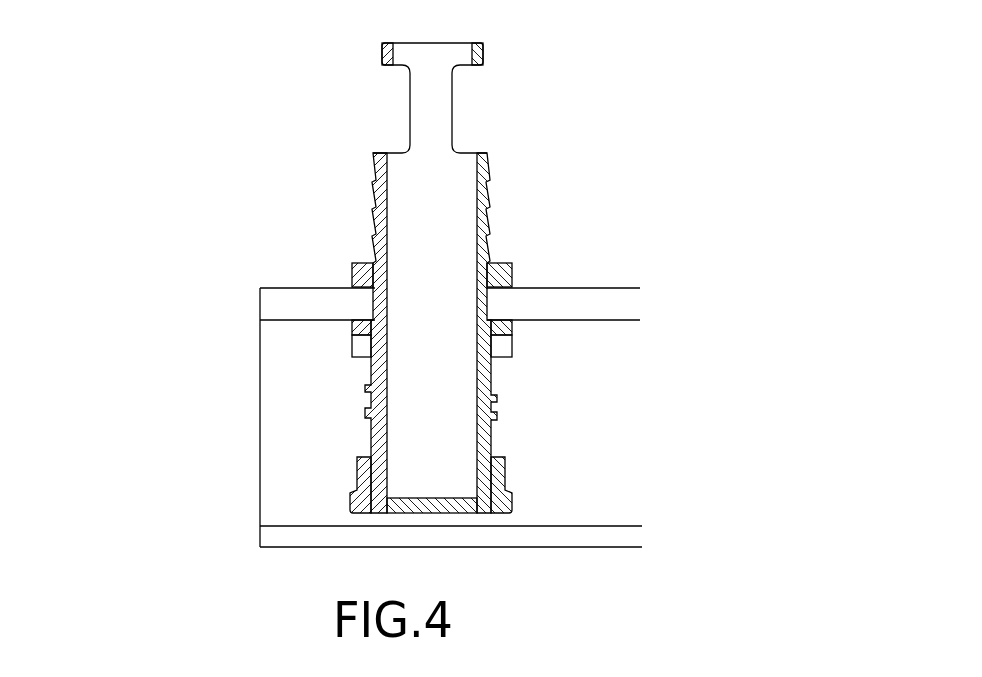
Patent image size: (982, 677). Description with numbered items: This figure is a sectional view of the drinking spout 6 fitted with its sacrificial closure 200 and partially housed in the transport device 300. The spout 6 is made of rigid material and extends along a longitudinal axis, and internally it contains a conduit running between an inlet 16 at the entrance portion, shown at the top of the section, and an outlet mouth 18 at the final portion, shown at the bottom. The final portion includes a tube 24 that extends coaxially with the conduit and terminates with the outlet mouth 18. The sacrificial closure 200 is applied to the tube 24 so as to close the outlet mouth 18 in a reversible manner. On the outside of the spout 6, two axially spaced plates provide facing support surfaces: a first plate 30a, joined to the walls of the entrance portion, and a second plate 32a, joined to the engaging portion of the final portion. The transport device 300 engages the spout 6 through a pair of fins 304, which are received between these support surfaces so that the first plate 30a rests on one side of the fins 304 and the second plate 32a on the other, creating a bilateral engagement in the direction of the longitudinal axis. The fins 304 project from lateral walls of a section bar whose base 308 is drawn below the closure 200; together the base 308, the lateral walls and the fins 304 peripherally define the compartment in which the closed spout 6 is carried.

The spout 6 is at (339, 194).
The inlet 16 is at (462, 150).
The outlet mouth 18 is at (442, 496).
The tube 24 is at (385, 427).
The first plate 30a is at (363, 275).
The second plate 32a is at (363, 328).
The sacrificial closure 200 is at (351, 478).
The transport device 300 is at (594, 284).
The fins 304 is at (612, 309).
The base 308 is at (617, 535).